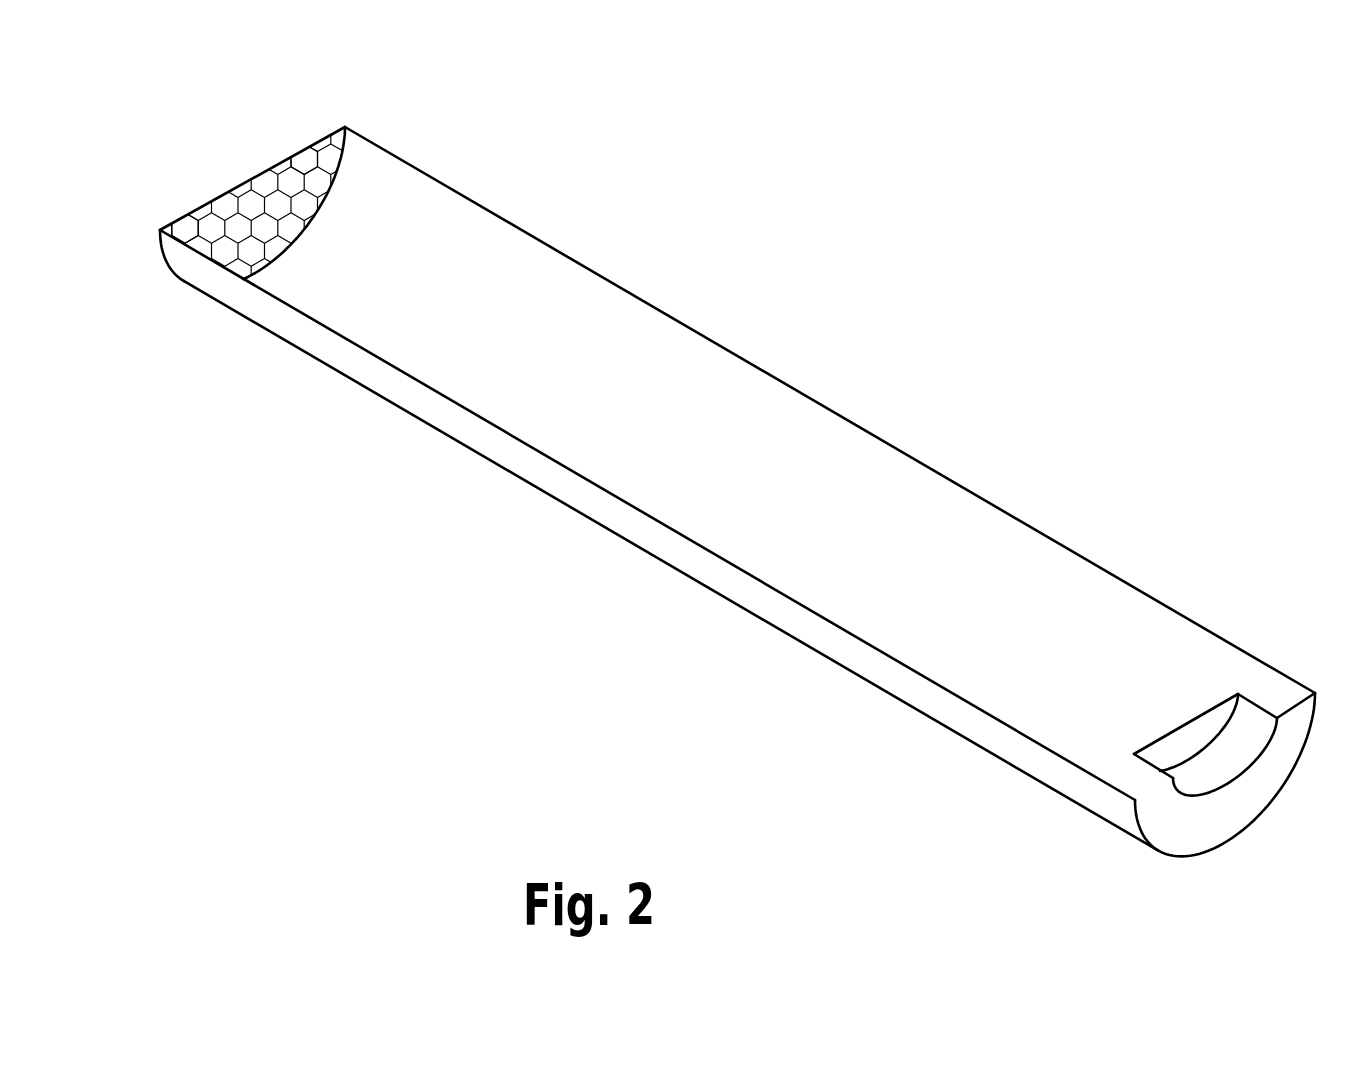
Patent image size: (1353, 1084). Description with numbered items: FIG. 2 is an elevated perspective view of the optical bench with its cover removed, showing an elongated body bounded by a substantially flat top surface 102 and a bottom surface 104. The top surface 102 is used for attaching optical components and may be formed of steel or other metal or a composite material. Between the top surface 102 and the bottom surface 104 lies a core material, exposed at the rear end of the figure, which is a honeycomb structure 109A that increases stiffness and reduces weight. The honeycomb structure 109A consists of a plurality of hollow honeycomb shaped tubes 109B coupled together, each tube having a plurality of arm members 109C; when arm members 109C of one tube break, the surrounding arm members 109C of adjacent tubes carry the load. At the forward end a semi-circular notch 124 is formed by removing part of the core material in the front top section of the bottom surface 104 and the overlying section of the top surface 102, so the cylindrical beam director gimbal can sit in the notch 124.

The top surface 102 is at (1055, 703).
The bottom surface 104 is at (1147, 842).
The notch 124 is at (1232, 755).
The honeycomb structure 109A is at (240, 158).
The honeycomb shaped tubes 109B is at (195, 232).
The arm members 109C is at (312, 150).